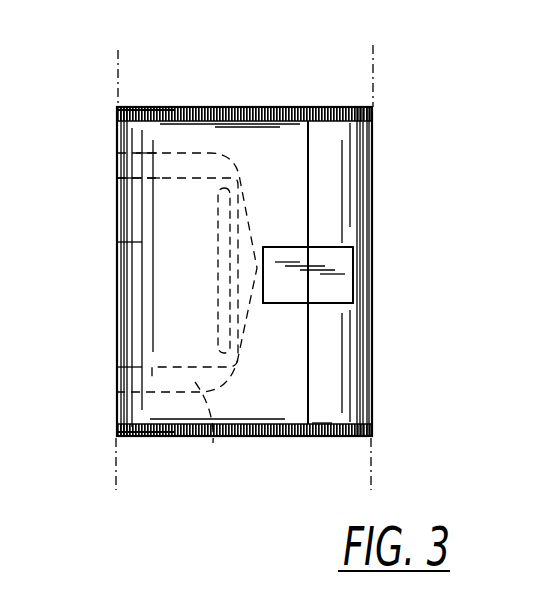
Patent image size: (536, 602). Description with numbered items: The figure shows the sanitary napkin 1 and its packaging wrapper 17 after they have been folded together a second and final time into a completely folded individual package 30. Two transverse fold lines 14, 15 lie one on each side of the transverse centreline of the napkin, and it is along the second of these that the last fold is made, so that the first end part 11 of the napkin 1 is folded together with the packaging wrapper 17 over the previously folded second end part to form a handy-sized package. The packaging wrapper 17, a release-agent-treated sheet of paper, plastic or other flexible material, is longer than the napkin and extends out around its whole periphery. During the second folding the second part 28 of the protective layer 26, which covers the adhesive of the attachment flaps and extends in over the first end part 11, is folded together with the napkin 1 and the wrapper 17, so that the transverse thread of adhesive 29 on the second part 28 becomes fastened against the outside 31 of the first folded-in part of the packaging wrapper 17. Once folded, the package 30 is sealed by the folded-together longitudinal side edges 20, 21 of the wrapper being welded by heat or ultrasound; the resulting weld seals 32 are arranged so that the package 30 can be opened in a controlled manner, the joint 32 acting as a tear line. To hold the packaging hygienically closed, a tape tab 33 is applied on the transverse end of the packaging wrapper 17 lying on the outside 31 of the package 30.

The sanitary napkin 1 is at (153, 371).
The first end part 11 is at (213, 443).
The transverse fold line 14 is at (375, 95).
The transverse fold line 15 is at (118, 95).
The packaging wrapper 17 is at (362, 158).
The longitudinal side edge of the packaging wrapper 20 is at (253, 110).
The longitudinal side edge of the packaging wrapper 21 is at (282, 438).
The protective layer 26 is at (165, 243).
The second part of the protective layer 28 is at (172, 303).
The transverse thread of adhesive 29 is at (222, 213).
The individual package 30 is at (357, 400).
The outside of the packaging wrapper 31 is at (353, 352).
The weld seal 32 is at (173, 110).
The tape tab 33 is at (340, 283).